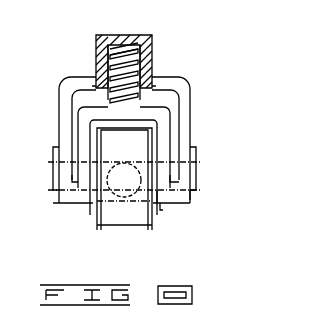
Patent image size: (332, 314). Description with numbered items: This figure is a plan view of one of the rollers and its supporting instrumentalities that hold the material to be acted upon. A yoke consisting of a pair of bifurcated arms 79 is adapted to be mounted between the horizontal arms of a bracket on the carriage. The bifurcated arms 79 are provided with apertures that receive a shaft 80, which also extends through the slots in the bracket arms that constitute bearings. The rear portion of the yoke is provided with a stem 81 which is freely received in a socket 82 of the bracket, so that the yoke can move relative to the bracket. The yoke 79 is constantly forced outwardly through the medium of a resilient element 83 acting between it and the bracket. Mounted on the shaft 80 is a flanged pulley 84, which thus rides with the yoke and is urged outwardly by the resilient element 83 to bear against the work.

The bifurcated arms 79 is at (162, 210).
The shaft 80 is at (194, 178).
The stem 81 is at (147, 63).
The socket 82 is at (112, 51).
The resilient element 83 is at (172, 96).
The flanged pulley 84 is at (118, 223).